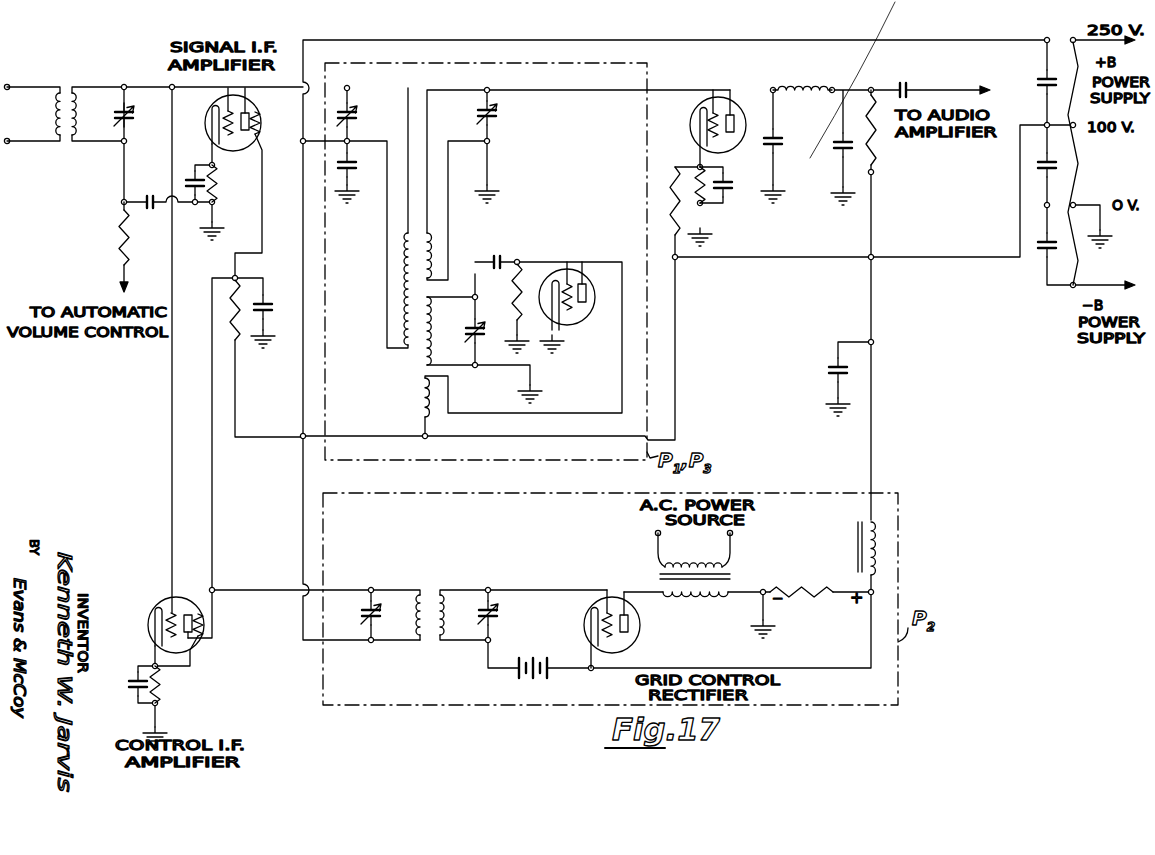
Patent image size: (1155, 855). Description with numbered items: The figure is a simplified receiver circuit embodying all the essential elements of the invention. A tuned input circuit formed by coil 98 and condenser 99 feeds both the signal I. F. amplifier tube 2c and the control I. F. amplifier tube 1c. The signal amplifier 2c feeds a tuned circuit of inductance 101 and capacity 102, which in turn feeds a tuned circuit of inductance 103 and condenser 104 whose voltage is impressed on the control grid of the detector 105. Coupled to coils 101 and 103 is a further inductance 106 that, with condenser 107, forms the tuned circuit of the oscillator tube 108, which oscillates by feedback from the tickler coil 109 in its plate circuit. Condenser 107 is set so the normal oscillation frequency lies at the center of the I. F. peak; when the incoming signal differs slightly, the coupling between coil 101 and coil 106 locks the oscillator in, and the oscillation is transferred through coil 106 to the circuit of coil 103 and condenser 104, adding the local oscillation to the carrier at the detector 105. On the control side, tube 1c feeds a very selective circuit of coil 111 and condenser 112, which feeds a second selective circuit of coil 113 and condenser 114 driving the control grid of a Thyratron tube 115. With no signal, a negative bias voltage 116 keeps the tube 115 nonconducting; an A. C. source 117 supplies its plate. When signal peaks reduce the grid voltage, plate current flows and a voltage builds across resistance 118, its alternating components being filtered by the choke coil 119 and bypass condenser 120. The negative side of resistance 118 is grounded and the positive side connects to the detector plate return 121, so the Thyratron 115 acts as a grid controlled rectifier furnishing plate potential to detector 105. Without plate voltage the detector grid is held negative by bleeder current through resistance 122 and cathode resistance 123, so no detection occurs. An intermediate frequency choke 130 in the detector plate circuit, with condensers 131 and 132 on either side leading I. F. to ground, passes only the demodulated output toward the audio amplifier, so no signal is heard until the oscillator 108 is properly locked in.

The coil 98 is at (68, 92).
The condenser 99 is at (128, 124).
The signal I. F. amplifier tube 2c is at (257, 122).
The control I. F. amplifier tube 1c is at (158, 599).
The inductance 101 is at (411, 348).
The capacity 102 is at (351, 130).
The inductance 103 is at (434, 250).
The condenser 104 is at (491, 130).
The detector 105 is at (698, 117).
The inductance 106 is at (430, 331).
The condenser 107 is at (483, 340).
The oscillator tube 108 is at (580, 318).
The tickler coil 109 is at (422, 402).
The coil 111 is at (421, 594).
The condenser 112 is at (368, 613).
The coil 113 is at (433, 638).
The condenser 114 is at (496, 620).
The Thyratron type tube 115 is at (638, 638).
The negative bias voltage 116 is at (548, 676).
The A. C. source of power 117 is at (676, 598).
The resistance 118 is at (797, 590).
The choke coil 119 is at (856, 552).
The bypass condenser 120 is at (833, 372).
The detector plate return 121 is at (876, 173).
The resistance 122 is at (676, 232).
The cathode resistance 123 is at (702, 204).
The intermediate frequency choke 130 is at (791, 88).
The condenser 131 is at (778, 140).
The condenser 132 is at (840, 150).